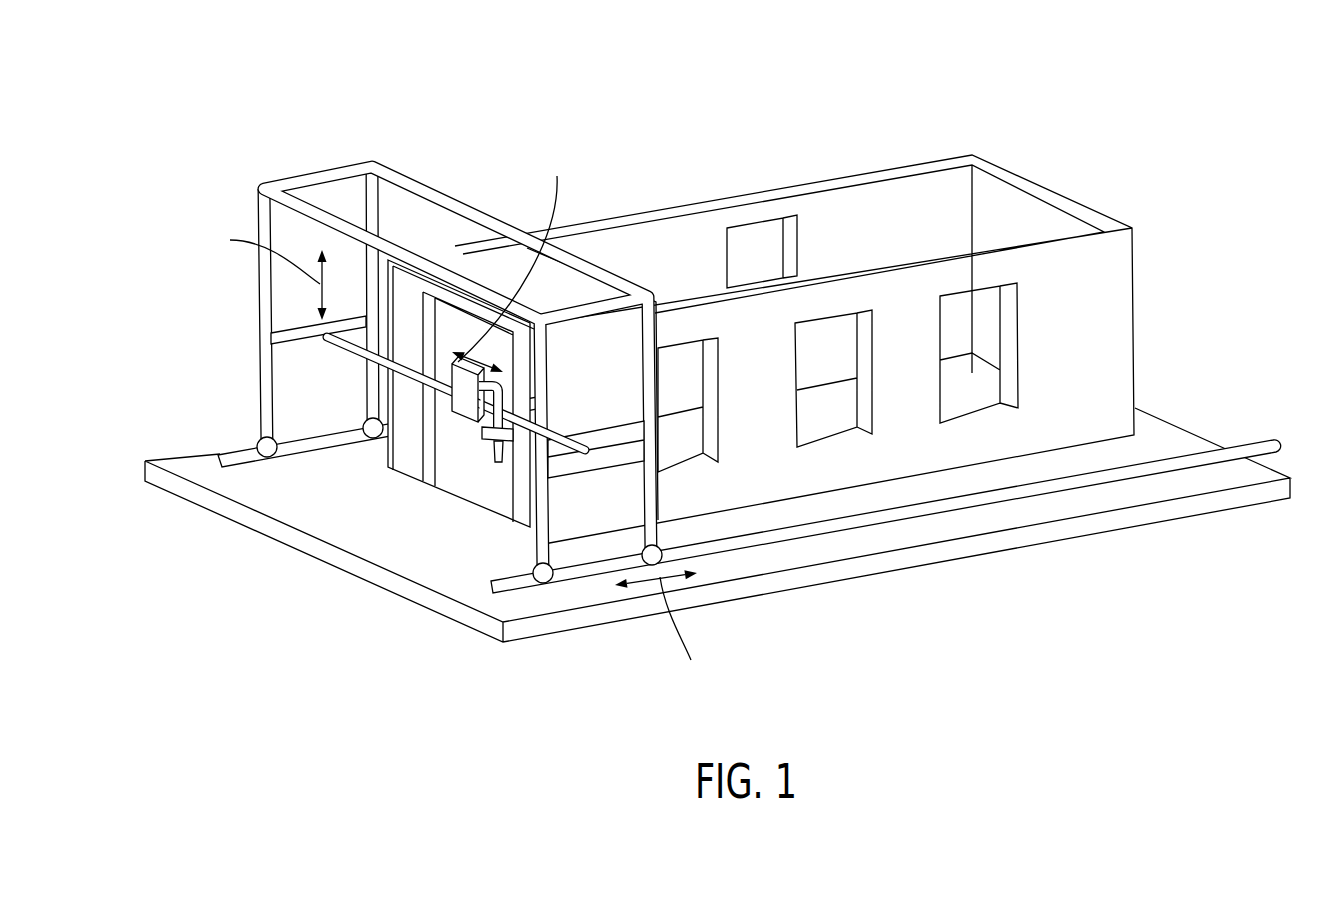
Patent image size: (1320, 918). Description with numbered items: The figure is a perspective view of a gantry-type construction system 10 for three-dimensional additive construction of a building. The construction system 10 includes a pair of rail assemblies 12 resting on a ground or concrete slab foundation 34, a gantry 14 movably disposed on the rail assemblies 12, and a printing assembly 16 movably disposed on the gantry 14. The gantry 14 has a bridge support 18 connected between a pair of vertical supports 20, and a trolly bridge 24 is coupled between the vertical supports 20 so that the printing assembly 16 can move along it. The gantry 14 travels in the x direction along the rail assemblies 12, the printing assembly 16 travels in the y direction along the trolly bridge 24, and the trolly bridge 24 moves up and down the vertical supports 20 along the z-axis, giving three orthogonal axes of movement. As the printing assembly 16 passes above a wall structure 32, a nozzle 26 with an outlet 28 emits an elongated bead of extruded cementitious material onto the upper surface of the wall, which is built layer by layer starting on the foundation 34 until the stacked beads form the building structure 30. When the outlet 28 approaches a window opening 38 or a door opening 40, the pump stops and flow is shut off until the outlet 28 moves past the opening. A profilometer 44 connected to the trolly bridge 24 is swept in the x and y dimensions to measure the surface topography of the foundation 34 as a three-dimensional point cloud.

The construction system 10 is at (717, 399).
The rail assemblies 12 is at (224, 453).
The gantry 14 is at (449, 383).
The printing assembly 16 is at (394, 437).
The bridge support 18 is at (445, 195).
The vertical supports 20 is at (449, 365).
The trolly bridge 24 is at (346, 342).
The nozzle 26 is at (468, 426).
The outlet 28 is at (484, 446).
The building structure 30 is at (857, 329).
The wall structure 32 is at (1134, 345).
The foundation 34 is at (1206, 439).
The window opening 38 is at (800, 249).
The door opening 40 is at (512, 496).
The profilometer 44 is at (413, 524).